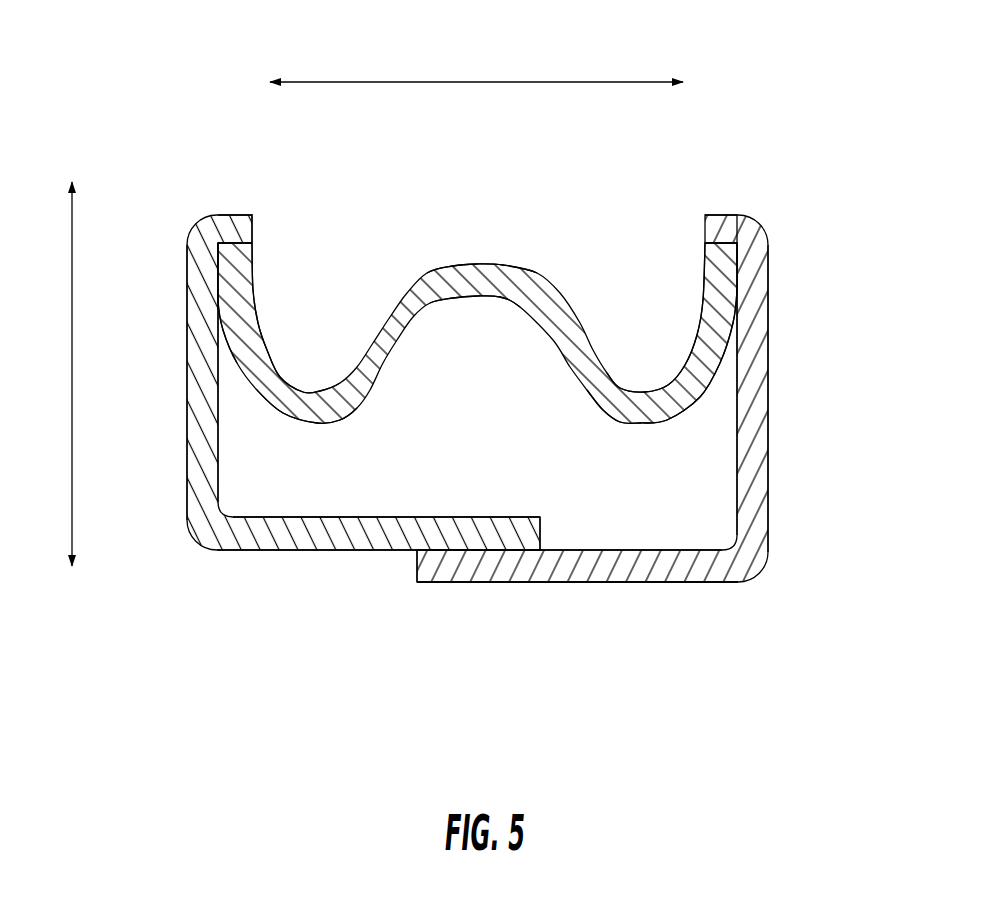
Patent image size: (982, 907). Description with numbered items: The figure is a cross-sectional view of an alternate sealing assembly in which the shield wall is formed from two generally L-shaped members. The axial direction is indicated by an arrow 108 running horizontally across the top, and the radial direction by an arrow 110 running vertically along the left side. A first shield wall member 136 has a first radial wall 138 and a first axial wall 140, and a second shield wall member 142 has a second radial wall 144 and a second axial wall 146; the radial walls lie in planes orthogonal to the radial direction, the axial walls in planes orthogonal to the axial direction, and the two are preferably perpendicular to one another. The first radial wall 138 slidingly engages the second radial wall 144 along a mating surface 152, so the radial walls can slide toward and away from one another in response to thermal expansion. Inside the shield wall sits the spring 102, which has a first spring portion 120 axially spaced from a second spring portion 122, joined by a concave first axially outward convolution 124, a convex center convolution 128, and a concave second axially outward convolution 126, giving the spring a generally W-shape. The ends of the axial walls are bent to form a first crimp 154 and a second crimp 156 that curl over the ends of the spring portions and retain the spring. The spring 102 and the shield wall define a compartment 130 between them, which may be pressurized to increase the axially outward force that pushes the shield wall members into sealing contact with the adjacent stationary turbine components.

The spring 102 is at (548, 228).
The arrow 108 is at (418, 82).
The arrow 110 is at (73, 357).
The first spring portion 120 is at (257, 293).
The second spring portion 122 is at (705, 265).
The first axially outward convolution 124 is at (338, 424).
The second axially outward convolution 126 is at (630, 428).
The center convolution 128 is at (490, 262).
The compartment 130 is at (437, 363).
The first shield wall member 136 is at (172, 547).
The first radial wall 138 is at (343, 550).
The first axial wall 140 is at (190, 283).
The second shield wall member 142 is at (780, 553).
The second radial wall 144 is at (683, 582).
The second axial wall 146 is at (763, 310).
The mating surface 152 is at (477, 550).
The first crimp 154 is at (240, 215).
The second crimp 156 is at (718, 222).